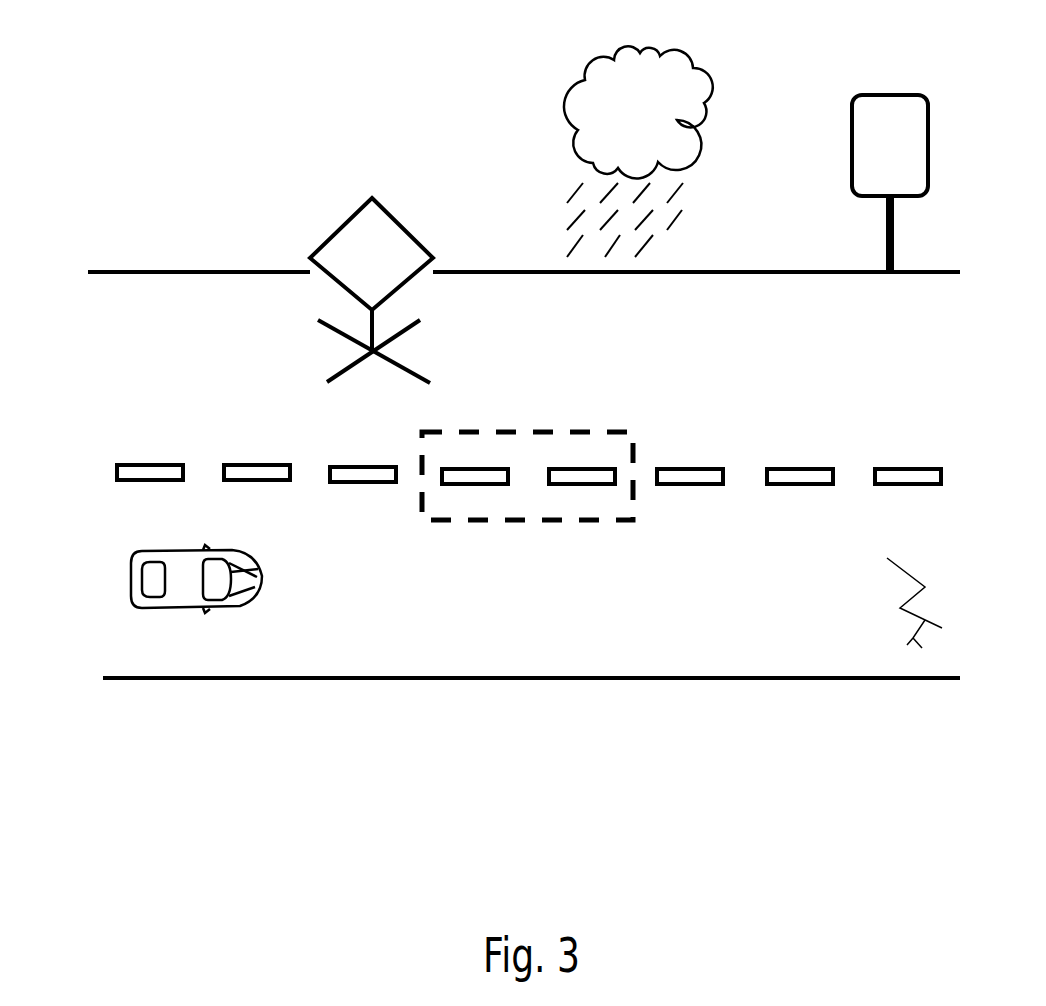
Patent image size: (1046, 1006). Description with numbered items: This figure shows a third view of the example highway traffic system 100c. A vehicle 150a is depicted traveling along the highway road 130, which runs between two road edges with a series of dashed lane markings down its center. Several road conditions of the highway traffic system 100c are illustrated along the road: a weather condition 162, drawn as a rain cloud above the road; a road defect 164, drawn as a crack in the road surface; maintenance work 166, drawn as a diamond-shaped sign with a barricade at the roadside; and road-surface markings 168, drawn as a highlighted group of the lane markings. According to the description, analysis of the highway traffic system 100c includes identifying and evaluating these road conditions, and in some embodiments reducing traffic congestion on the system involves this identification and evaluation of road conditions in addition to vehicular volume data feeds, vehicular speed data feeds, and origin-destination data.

The highway traffic system 100c is at (182, 72).
The highway road 130 is at (160, 280).
The vehicle 150a is at (147, 549).
The weather condition 162 is at (665, 120).
The road defect 164 is at (890, 580).
The maintenance work 166 is at (388, 267).
The road-surface marking 168 is at (420, 459).